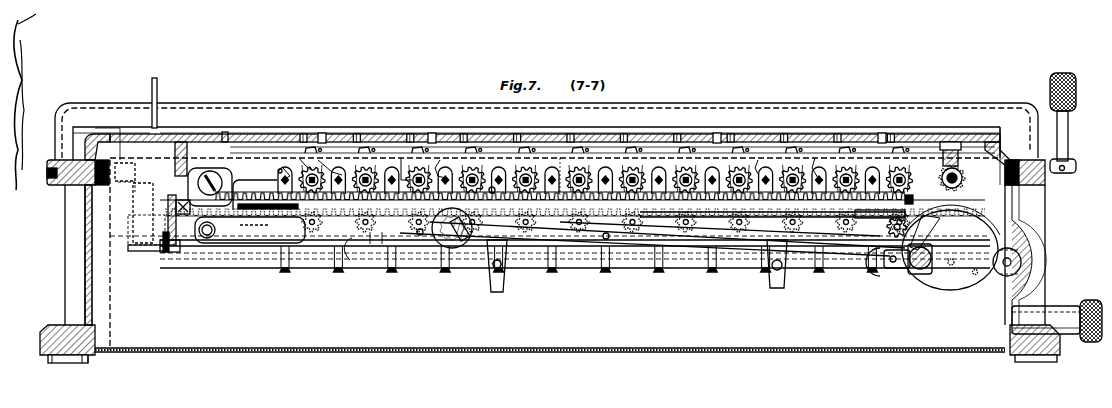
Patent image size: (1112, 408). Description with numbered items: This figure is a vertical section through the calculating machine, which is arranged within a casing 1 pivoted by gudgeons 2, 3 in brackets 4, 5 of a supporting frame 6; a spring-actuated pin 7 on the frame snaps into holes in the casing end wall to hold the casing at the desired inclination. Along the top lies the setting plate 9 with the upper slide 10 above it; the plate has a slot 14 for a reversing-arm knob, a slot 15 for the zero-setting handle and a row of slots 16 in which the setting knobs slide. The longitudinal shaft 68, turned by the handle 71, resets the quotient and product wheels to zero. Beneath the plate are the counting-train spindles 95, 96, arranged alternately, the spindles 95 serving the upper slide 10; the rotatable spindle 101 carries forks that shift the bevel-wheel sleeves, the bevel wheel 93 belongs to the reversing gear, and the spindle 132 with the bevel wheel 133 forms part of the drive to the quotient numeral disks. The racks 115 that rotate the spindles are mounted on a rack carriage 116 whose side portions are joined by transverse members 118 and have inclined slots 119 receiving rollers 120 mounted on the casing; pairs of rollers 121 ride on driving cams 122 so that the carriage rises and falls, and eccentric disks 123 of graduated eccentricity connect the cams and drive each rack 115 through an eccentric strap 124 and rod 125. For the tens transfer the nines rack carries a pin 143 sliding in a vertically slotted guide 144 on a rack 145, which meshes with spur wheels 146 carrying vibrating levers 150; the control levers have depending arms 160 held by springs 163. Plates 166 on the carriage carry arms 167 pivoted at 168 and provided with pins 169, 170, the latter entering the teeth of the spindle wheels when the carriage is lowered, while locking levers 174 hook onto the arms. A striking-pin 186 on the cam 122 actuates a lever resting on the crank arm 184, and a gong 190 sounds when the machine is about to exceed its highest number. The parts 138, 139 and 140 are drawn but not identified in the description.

The casing 1 is at (85, 253).
The gudgeon 2 is at (1040, 192).
The gudgeon 3 is at (58, 186).
The bracket 4 is at (1040, 272).
The bracket 5 is at (62, 283).
The supporting frame 6 is at (42, 355).
The spring-actuated pin 7 is at (1092, 342).
The setting plate 9 is at (380, 138).
The upper slide 10 is at (262, 108).
The slot 14 is at (175, 122).
The slot 15 is at (321, 134).
The slot 16 is at (716, 134).
The longitudinal shaft 68 is at (128, 172).
The handle 71 is at (1050, 92).
The bevel wheel 93 is at (960, 180).
The counting train spindle 95 is at (300, 184).
The counting train spindle 96 is at (268, 184).
The rotatable spindle 101 is at (186, 252).
The rack 115 is at (906, 214).
The rack carriage 116 is at (652, 230).
The transverse member 118 is at (392, 230).
The inclined slot 119 is at (460, 248).
The roller 120 is at (448, 250).
The roller 121 is at (880, 272).
The driving cam 122 is at (952, 290).
The eccentric disk 123 is at (910, 280).
The eccentric strap 124 is at (928, 255).
The rod 125 is at (748, 250).
The spindle 132 is at (962, 172).
The bevel wheel 133 is at (948, 150).
The screw 138 is at (165, 254).
The plate 139 is at (128, 232).
The post 140 is at (177, 183).
The pin 143 is at (510, 250).
The vertically slotted guide 144 is at (494, 187).
The rack 145 is at (200, 180).
The spur wheel 146 is at (275, 235).
The lever 150 is at (608, 242).
The lever arm 160 is at (350, 262).
The spring 163 is at (417, 238).
The plate 166 is at (759, 158).
The arm 167 is at (438, 176).
The pivot pin 168 is at (428, 150).
The pin 169 is at (309, 170).
The pin 170 is at (332, 172).
The locking lever 174 is at (814, 150).
The crank arm 184 is at (940, 235).
The striking-pin 186 is at (972, 273).
The gong 190 is at (288, 222).